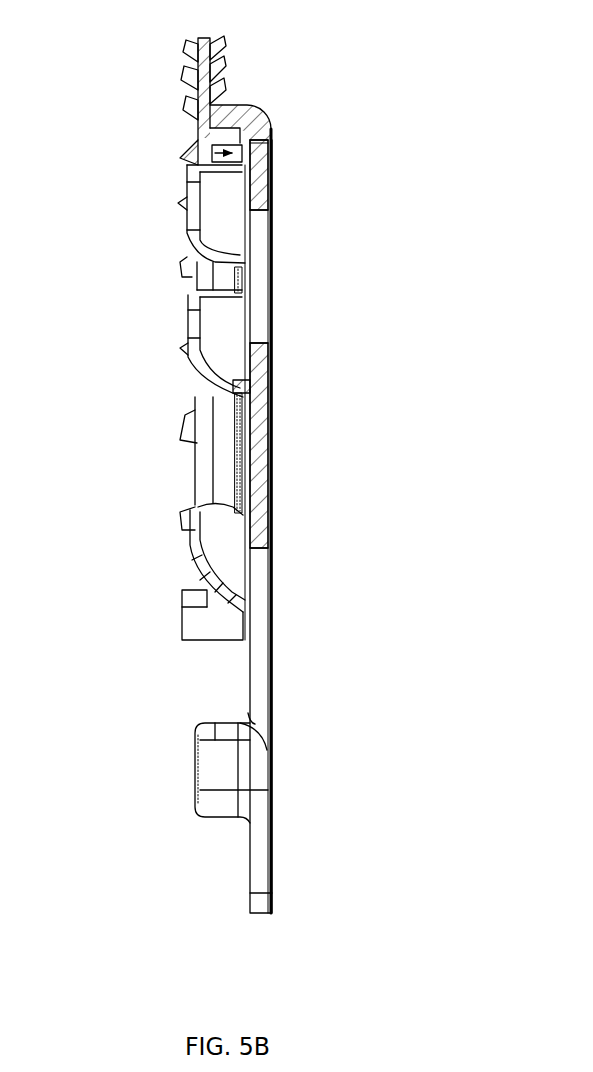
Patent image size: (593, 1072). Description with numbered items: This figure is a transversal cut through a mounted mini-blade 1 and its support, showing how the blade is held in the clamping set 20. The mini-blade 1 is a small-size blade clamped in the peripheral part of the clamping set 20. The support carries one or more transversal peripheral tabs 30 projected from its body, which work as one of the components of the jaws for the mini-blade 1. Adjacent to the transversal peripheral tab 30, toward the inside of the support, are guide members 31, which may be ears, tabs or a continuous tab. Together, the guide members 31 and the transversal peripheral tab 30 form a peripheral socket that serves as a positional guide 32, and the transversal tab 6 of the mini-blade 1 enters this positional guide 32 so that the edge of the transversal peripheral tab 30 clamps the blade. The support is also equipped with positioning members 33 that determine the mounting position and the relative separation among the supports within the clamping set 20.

The mini-blade 1 is at (174, 93).
The transversal tab 6 is at (250, 143).
The clamping set 20 is at (290, 418).
The transversal peripheral tab 30 is at (252, 108).
The guide member 31 is at (195, 197).
The positional guide 32 is at (190, 150).
The positioning member 33 is at (220, 766).